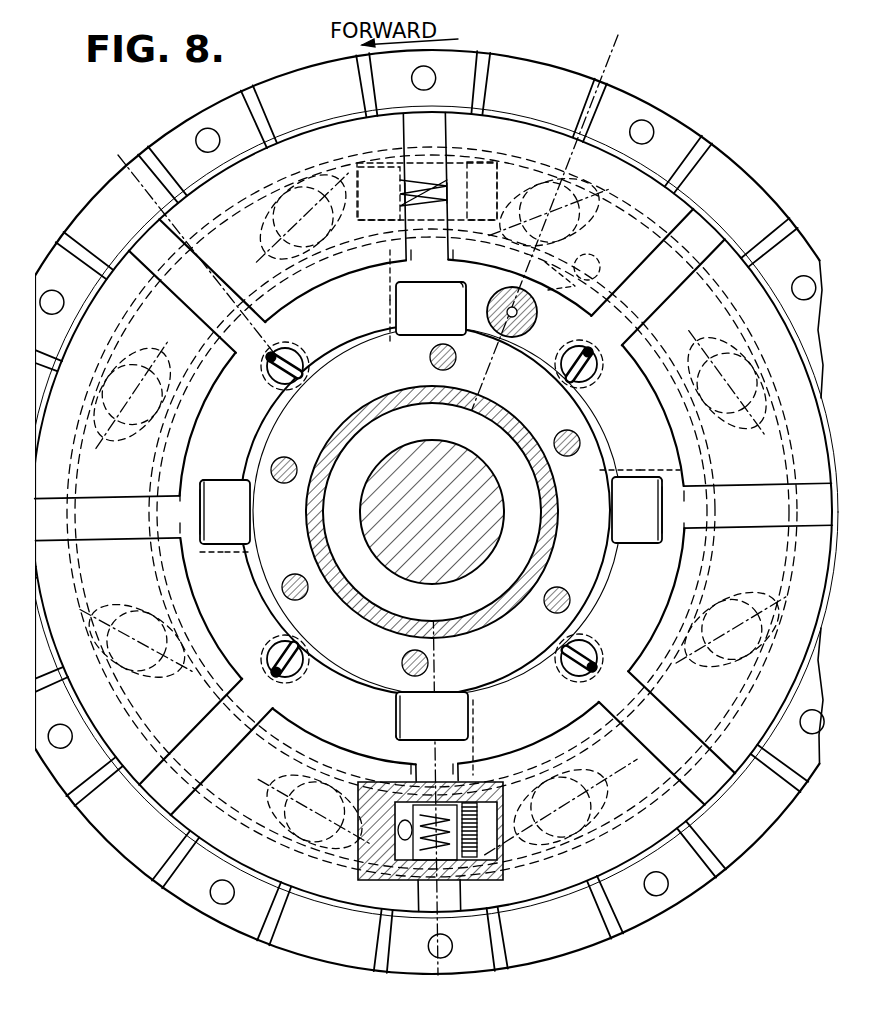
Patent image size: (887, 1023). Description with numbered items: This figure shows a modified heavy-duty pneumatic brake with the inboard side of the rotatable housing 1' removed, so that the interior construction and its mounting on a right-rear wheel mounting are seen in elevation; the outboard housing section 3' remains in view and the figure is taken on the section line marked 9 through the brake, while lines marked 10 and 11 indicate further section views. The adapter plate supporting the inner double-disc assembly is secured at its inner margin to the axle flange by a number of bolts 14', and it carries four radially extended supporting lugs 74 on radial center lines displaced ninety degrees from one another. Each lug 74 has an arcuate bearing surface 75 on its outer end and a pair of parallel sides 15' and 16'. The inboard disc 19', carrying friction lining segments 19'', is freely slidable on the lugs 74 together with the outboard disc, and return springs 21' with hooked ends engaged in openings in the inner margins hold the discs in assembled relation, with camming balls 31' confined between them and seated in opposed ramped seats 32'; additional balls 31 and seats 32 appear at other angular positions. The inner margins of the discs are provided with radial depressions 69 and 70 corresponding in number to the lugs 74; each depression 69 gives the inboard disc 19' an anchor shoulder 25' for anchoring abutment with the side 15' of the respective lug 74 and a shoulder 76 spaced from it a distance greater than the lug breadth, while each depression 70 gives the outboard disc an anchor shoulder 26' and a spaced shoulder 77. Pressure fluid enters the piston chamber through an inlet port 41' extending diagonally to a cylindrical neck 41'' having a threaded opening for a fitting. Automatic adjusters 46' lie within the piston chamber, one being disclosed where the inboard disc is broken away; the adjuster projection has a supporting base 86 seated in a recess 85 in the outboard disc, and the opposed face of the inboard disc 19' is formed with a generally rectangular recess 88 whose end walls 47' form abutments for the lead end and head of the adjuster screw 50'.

The rotatable housing 1' is at (432, 512).
The outboard housing section 3' is at (414, 513).
The section line 9- 9 is at (634, 60).
The section line 10- 10 is at (102, 163).
The segment 11 is at (278, 790).
The bolts 14' is at (425, 520).
The parallel side of lug 15' is at (428, 494).
The parallel side of lug 16' is at (438, 507).
The inboard disc 19' is at (447, 506).
The friction lining segments 19'' is at (627, 271).
The return springs 21' is at (432, 511).
The anchor shoulder 25' is at (519, 537).
The anchor shoulder 26' is at (460, 486).
The opening 31 is at (135, 511).
The camming balls 31' is at (512, 412).
The recess 32 is at (482, 500).
The ramped seats 32' is at (391, 288).
The inlet port 41' is at (547, 310).
The cylindrical neck 41'' is at (547, 273).
The automatic adjusters 46' is at (423, 520).
The spring seat 47' is at (438, 810).
The adjuster screw 50' is at (393, 865).
The radial depressions 69 is at (427, 282).
The radial depressions 70 is at (408, 262).
The supporting lugs 74 is at (431, 511).
The arcuate bearing surface 75 is at (200, 515).
The shoulder 76 is at (456, 358).
The shoulder 77 is at (390, 312).
The recess 85 is at (360, 876).
The supporting base 86 is at (372, 850).
The rectangular recess 88 is at (520, 790).